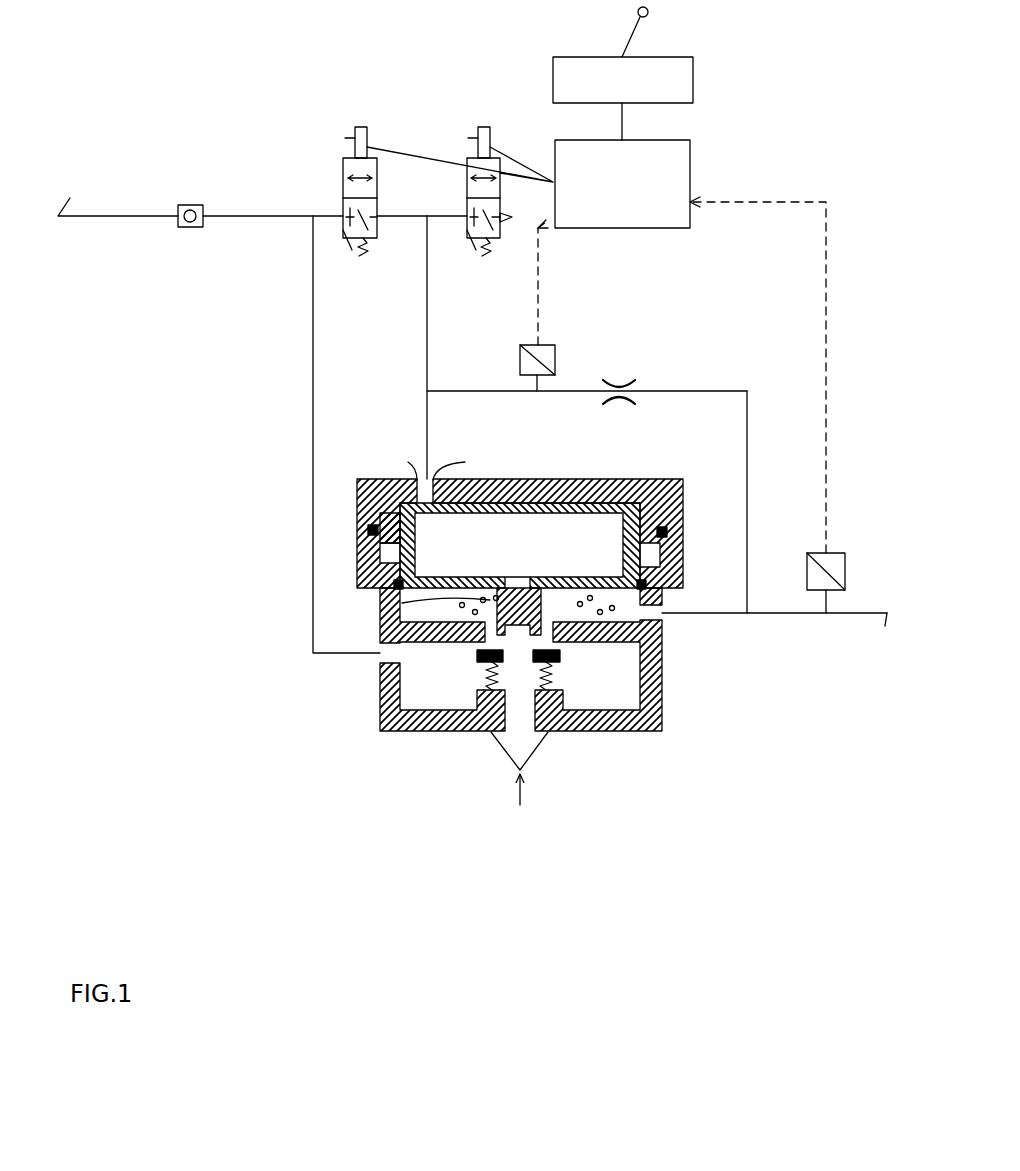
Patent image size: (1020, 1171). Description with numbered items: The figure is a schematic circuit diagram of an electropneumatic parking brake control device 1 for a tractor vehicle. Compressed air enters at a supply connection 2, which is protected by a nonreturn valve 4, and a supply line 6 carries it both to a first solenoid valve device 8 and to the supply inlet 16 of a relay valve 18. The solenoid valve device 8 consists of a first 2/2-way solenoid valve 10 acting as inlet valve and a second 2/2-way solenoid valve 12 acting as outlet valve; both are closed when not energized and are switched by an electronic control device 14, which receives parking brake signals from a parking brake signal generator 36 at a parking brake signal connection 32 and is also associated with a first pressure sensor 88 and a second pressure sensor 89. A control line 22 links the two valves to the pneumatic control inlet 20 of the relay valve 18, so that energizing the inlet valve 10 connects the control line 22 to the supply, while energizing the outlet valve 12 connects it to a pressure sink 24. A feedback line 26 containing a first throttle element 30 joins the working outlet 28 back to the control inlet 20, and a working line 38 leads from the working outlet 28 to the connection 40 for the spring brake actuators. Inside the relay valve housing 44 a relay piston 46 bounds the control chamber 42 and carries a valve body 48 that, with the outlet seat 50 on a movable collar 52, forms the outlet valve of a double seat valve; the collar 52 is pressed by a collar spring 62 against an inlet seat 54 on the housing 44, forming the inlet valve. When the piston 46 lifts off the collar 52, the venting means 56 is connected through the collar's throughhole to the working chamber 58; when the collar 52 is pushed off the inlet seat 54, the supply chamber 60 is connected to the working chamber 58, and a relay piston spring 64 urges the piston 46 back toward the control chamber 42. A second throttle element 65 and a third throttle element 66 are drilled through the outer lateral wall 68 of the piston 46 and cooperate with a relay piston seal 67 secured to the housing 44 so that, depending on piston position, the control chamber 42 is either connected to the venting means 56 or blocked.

The electropneumatic parking brake control device 1 is at (262, 748).
The supply connection 2 is at (118, 189).
The nonreturn valve 4 is at (190, 228).
The supply line 6 is at (252, 215).
The first solenoid valve device 8 is at (437, 100).
The first 2/2-way solenoid valve 10 is at (349, 205).
The second 2/2-way solenoid valve 12 is at (475, 203).
The electronic control device 14 is at (640, 200).
The supply inlet 16 is at (372, 660).
The relay valve 18 is at (663, 720).
The pneumatic control inlet 20 is at (495, 507).
The control line 22 is at (428, 330).
The pressure sink 24 is at (520, 808).
The feedback line 26 is at (750, 475).
The working outlet 28 is at (677, 640).
The first throttle element 30 is at (624, 368).
The parking brake signal connection 32 is at (625, 138).
The parking brake signal generator 36 is at (640, 95).
The working line 38 is at (710, 615).
The connection for spring brake actuator 40 is at (871, 640).
The control chamber 42 is at (452, 461).
The relay valve housing 44 is at (378, 690).
The relay piston 46 is at (645, 482).
The valve body 48 is at (516, 600).
The outlet seat 50 is at (480, 648).
The collar 52 is at (480, 663).
The inlet seat 54 is at (563, 650).
The venting means 56 is at (527, 748).
The working chamber 58 is at (612, 606).
The supply chamber 60 is at (655, 683).
The collar spring 62 is at (475, 733).
The relay piston spring 64 is at (385, 600).
The second throttle element 65 is at (372, 522).
The third throttle element 66 is at (378, 525).
The relay piston seal 67 is at (385, 532).
The lateral wall 68 is at (668, 522).
The first pressure sensor 88 is at (807, 570).
The second pressure sensor 89 is at (555, 357).